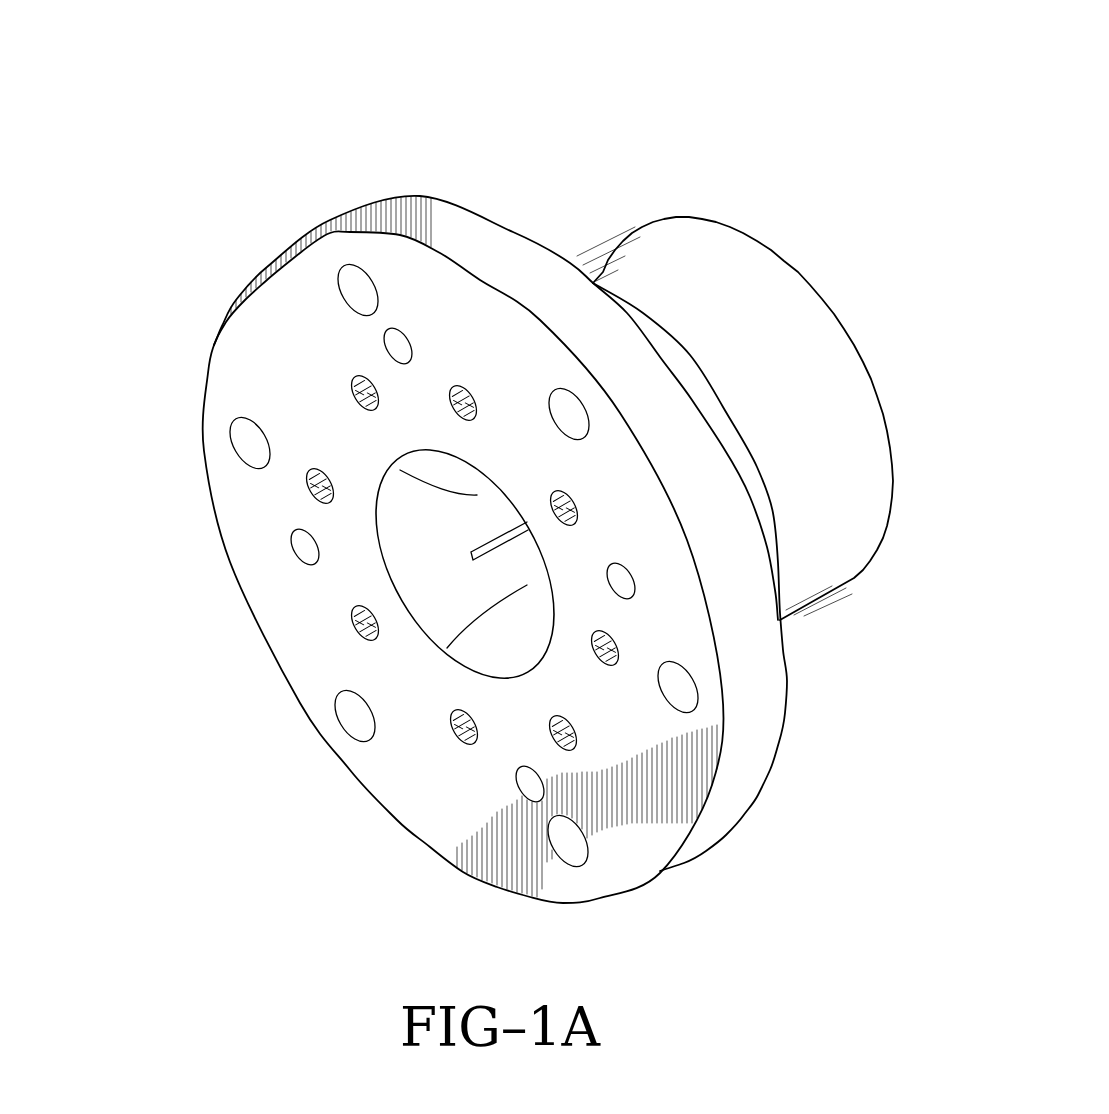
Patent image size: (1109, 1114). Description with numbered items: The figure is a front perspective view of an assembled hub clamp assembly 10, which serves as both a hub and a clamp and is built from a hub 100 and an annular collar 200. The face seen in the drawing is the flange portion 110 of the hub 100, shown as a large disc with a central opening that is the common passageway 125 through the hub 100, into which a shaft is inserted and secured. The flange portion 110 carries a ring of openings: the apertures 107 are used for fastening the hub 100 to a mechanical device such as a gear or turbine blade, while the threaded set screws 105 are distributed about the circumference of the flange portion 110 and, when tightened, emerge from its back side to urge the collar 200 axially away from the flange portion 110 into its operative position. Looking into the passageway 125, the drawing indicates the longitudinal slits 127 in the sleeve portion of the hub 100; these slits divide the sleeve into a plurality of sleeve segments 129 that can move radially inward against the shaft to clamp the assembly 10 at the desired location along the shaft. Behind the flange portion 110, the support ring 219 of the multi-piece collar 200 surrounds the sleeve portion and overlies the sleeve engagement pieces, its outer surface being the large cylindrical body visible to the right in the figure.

The hub clamp assembly 10 is at (507, 467).
The hub 100 is at (458, 491).
The set screws 105 is at (311, 486).
The apertures 107 is at (350, 290).
The flange portion 110 is at (730, 803).
The common passageway 125 is at (405, 540).
The longitudinal slits 127 is at (473, 560).
The sleeve segments 129 is at (400, 470).
The annular collar 200 is at (726, 352).
The support ring 219 is at (800, 328).